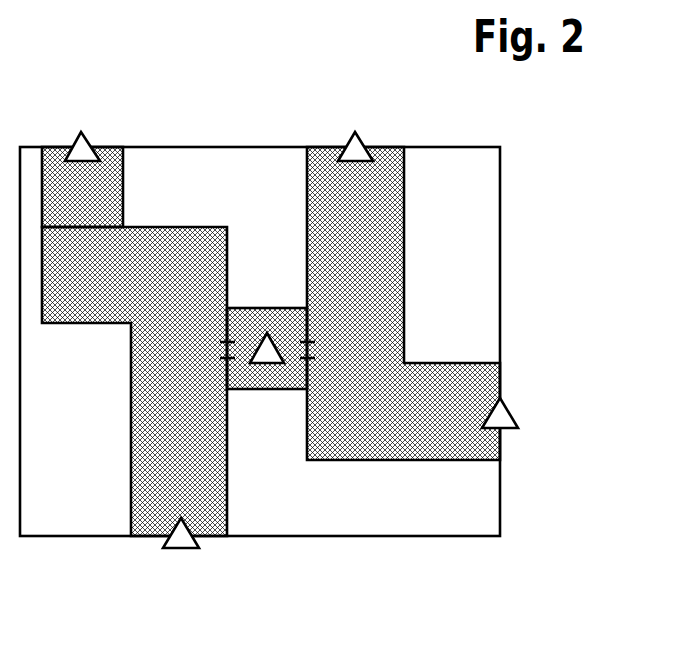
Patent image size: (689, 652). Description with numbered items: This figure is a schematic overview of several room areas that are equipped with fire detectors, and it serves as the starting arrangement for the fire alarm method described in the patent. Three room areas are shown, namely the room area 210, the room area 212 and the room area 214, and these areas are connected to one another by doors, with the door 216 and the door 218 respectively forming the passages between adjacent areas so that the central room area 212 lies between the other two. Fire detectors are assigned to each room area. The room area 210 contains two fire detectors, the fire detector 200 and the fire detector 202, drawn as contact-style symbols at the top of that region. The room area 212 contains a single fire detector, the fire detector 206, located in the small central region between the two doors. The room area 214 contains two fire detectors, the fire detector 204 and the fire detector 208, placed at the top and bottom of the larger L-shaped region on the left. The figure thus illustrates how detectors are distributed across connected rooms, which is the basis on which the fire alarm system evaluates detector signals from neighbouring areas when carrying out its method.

The fire detector 200 is at (515, 413).
The fire detector 202 is at (353, 134).
The fire detector 204 is at (80, 134).
The fire detector 206 is at (267, 364).
The fire detector 208 is at (181, 549).
The room area 210 is at (390, 275).
The room area 212 is at (255, 318).
The room area 214 is at (145, 411).
The door 216 is at (313, 350).
The door 218 is at (222, 350).